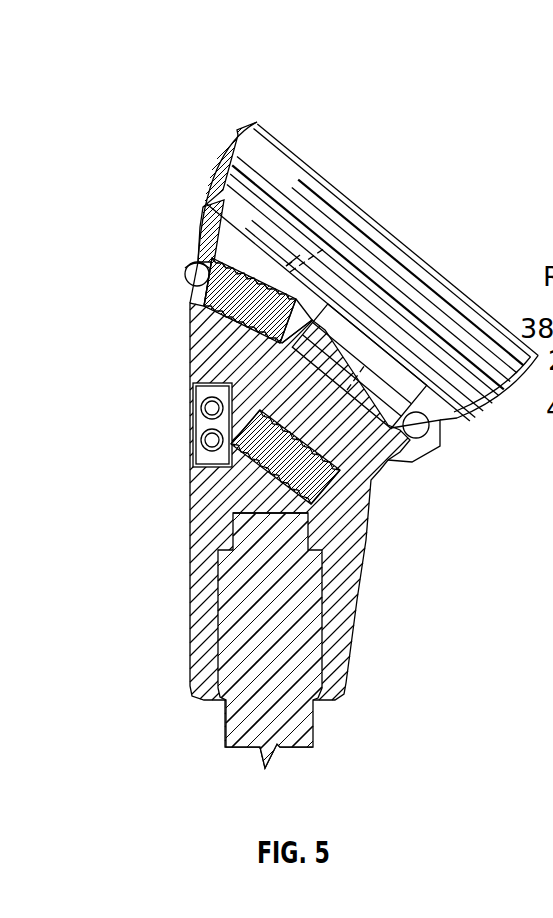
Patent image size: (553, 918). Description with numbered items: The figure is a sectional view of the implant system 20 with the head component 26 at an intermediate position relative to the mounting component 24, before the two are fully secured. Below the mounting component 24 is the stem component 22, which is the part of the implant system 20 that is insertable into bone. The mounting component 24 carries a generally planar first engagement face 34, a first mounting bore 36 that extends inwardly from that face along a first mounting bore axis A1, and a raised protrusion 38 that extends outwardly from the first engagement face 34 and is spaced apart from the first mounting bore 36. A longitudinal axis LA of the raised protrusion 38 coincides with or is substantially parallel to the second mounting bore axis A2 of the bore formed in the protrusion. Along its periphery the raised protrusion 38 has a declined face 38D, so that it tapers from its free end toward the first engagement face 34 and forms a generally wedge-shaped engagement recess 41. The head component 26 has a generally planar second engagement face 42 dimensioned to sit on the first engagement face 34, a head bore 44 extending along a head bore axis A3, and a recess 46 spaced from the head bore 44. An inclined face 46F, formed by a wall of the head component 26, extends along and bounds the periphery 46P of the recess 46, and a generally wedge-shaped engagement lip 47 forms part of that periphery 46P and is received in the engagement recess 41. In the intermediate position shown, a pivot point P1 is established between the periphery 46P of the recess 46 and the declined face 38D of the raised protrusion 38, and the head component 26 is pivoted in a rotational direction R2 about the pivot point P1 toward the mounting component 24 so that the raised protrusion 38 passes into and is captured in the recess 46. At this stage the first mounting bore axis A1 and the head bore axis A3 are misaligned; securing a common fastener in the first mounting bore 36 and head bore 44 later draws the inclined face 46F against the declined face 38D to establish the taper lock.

The implant system 20 is at (186, 75).
The stem component 22 is at (297, 750).
The mounting component 24 is at (186, 378).
The head component 26 is at (212, 136).
The first engagement face 34 is at (378, 466).
The first mounting bore 36 is at (233, 511).
The raised protrusion 38 is at (335, 290).
The declined face 38D is at (192, 303).
The engagement recess 41 is at (208, 282).
The second engagement face 42 is at (388, 458).
The head bore 44 is at (447, 432).
The recess 46 is at (197, 392).
The periphery of the recess 46P is at (292, 262).
The inclined face 46F is at (289, 264).
The engagement lip 47 is at (207, 240).
The first mounting bore axis A1 is at (372, 378).
The second mounting bore axis A2 is at (307, 253).
The head bore axis A3 is at (388, 296).
The longitudinal axis LA is at (318, 258).
The pivot point P1 is at (186, 291).
The rotational direction R2 is at (193, 266).